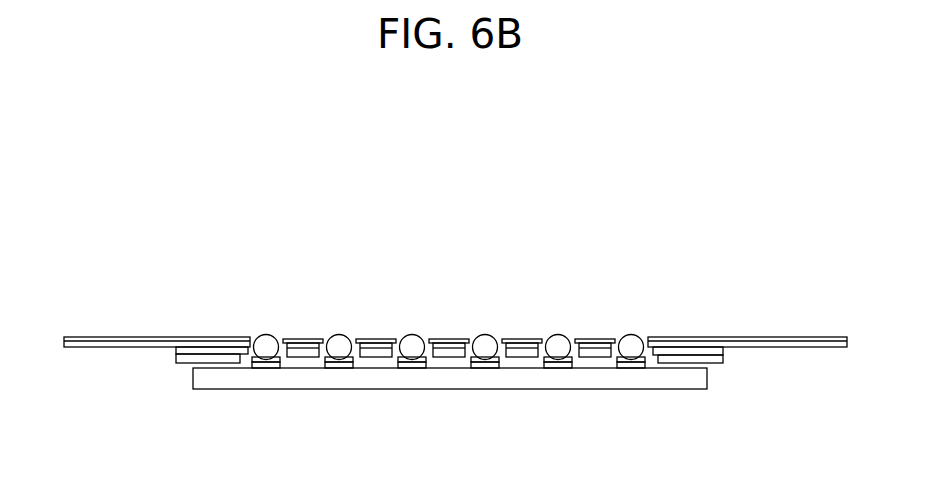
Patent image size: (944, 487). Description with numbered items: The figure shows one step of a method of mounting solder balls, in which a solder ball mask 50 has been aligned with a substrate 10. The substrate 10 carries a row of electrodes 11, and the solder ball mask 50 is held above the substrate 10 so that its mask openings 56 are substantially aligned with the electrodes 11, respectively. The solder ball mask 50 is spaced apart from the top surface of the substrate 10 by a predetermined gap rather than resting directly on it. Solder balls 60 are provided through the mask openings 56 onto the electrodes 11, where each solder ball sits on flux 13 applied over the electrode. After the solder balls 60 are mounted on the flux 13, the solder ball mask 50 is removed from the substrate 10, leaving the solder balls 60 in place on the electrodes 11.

The substrate 10 is at (692, 382).
The electrodes 11 is at (333, 368).
The flux 13 is at (342, 362).
The solder ball mask 50 is at (780, 315).
The mask openings 56 is at (339, 330).
The solder balls 60 is at (265, 334).